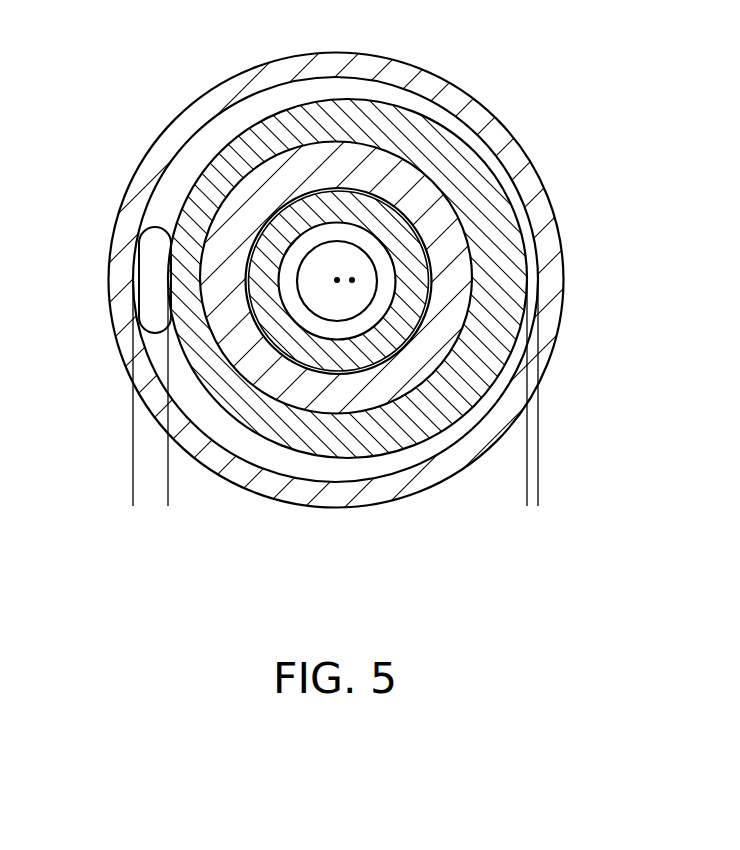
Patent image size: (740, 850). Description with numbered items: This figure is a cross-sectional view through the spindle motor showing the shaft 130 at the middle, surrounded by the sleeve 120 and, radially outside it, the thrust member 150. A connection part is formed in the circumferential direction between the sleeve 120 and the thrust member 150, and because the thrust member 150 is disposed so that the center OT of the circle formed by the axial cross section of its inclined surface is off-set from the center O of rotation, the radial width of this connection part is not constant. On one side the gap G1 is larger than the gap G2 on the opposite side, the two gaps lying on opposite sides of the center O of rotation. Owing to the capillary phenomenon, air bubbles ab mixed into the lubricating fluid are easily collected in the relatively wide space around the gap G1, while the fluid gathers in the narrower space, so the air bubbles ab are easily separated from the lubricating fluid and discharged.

The sleeve 120 is at (417, 192).
The shaft 130 is at (357, 207).
The thrust member 150 is at (473, 188).
The air bubbles ab is at (157, 261).
The gap G1 is at (170, 497).
The gap G2 is at (553, 497).
The center of rotation O is at (337, 280).
The center of the circle formed by the axial cross section of the inclined surface OT is at (352, 280).